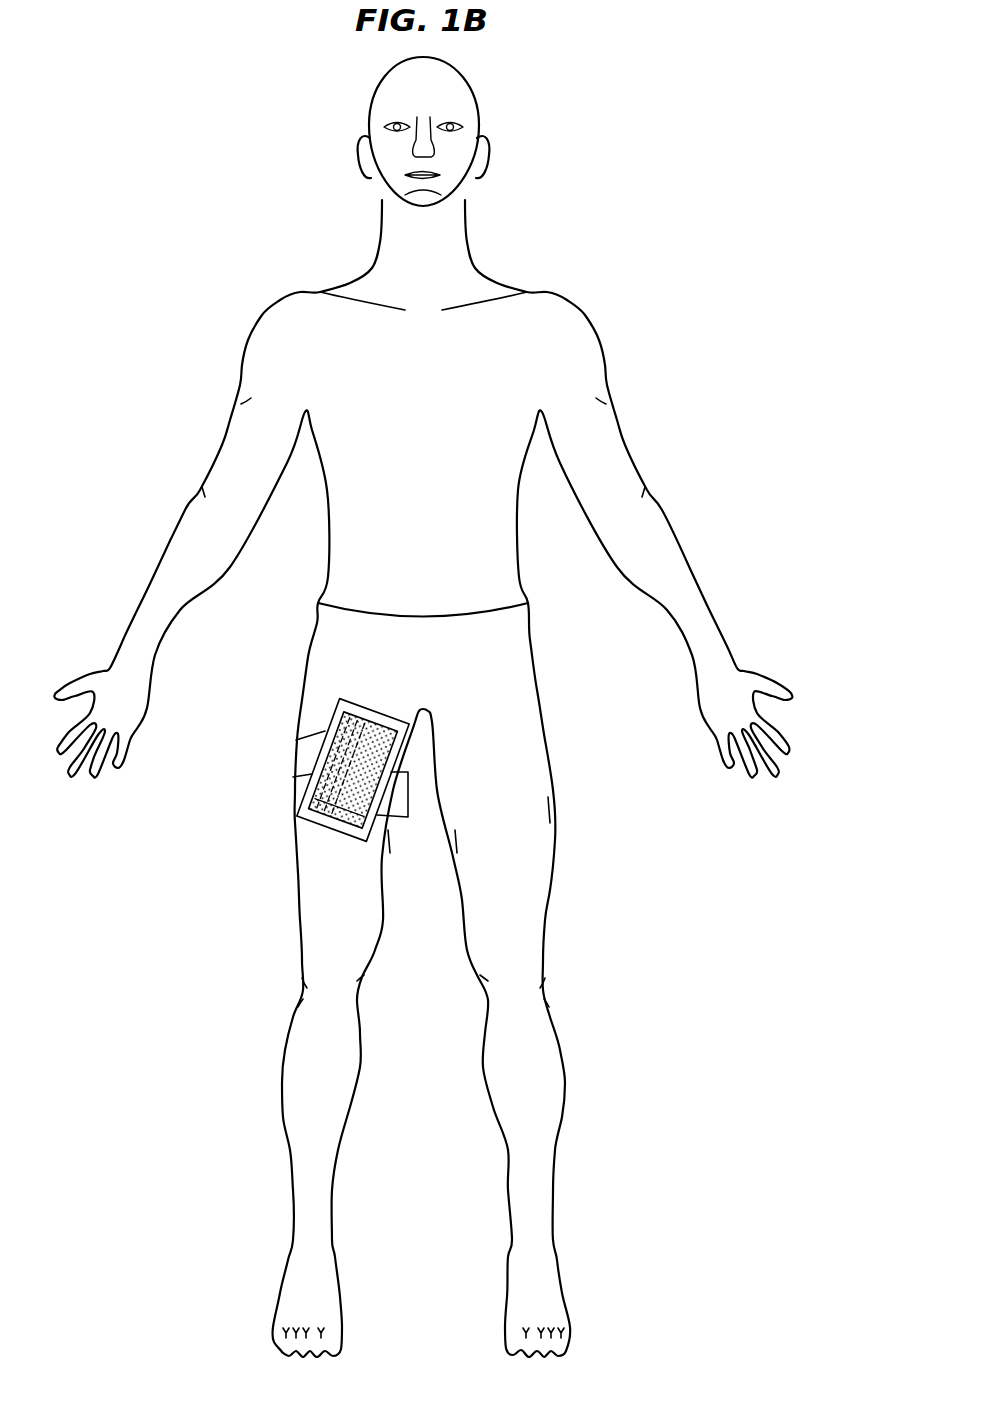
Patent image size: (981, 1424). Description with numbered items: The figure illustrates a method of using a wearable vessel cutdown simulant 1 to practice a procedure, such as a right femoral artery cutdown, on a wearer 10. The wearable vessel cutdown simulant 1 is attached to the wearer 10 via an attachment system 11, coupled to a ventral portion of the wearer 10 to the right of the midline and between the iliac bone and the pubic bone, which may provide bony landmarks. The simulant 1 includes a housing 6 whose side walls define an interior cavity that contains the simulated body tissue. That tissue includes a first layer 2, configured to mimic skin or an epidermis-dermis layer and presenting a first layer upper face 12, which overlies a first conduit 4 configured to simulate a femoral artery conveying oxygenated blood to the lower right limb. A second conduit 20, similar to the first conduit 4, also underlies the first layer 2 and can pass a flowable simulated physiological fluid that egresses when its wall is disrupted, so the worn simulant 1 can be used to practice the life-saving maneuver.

The vessel cutdown simulant 1 is at (432, 792).
The first layer 2 is at (476, 770).
The first layer upper face 12 is at (358, 768).
The first conduit 4 is at (318, 803).
The housing 6 is at (383, 714).
The wearer 10 is at (592, 285).
The attachment system 11 is at (303, 763).
The second conduit 20 is at (340, 798).